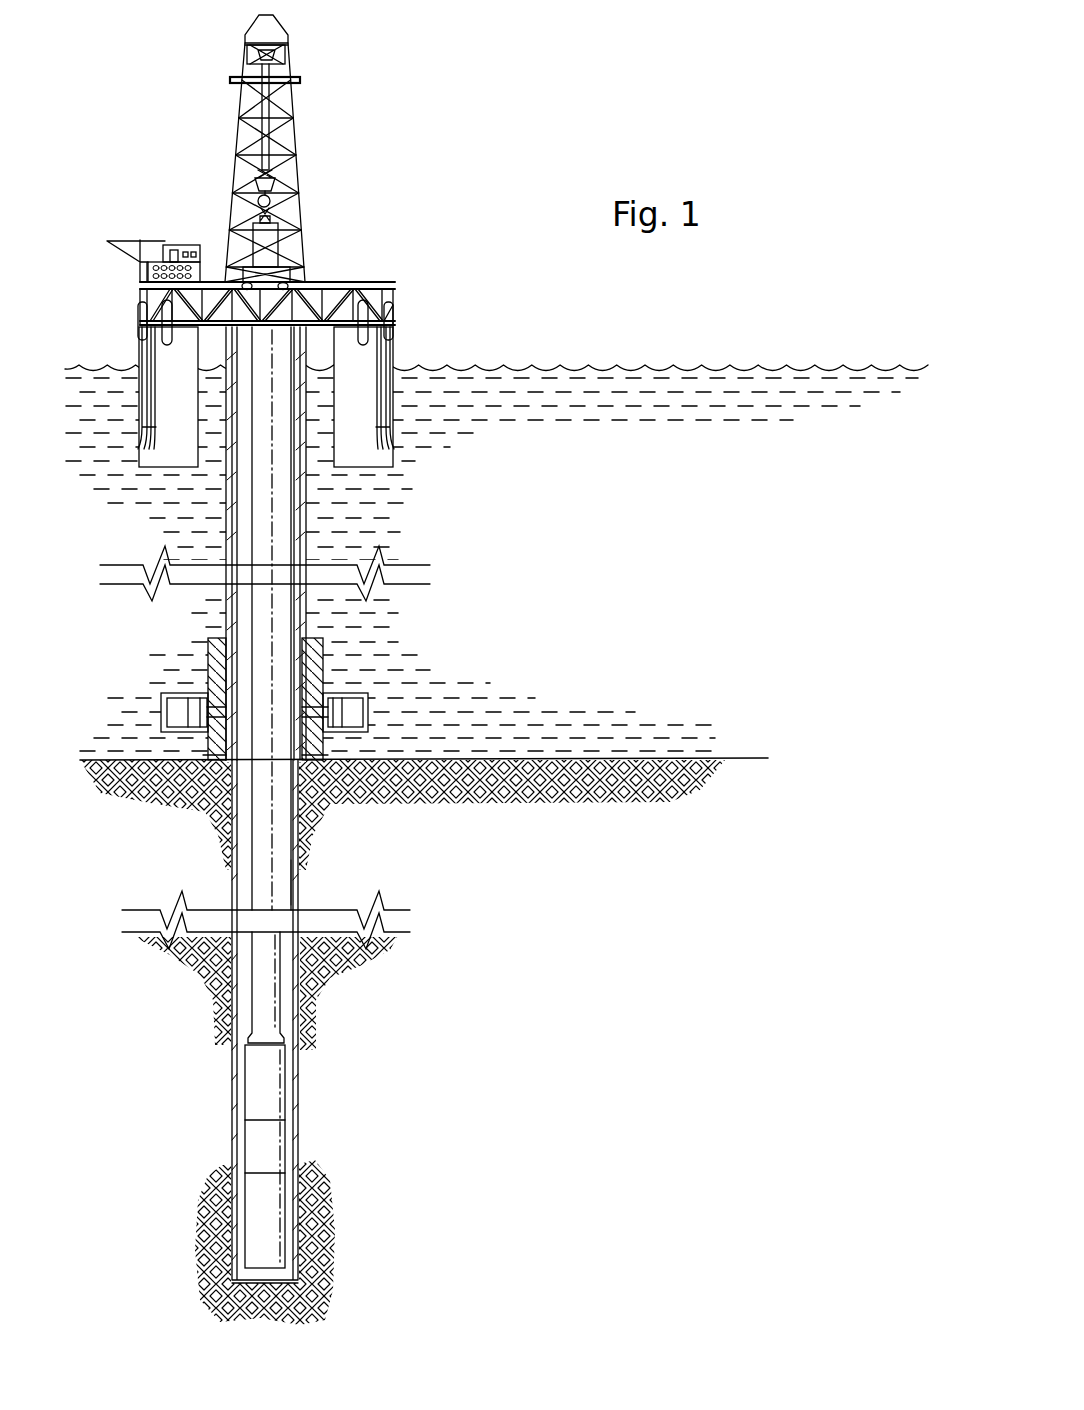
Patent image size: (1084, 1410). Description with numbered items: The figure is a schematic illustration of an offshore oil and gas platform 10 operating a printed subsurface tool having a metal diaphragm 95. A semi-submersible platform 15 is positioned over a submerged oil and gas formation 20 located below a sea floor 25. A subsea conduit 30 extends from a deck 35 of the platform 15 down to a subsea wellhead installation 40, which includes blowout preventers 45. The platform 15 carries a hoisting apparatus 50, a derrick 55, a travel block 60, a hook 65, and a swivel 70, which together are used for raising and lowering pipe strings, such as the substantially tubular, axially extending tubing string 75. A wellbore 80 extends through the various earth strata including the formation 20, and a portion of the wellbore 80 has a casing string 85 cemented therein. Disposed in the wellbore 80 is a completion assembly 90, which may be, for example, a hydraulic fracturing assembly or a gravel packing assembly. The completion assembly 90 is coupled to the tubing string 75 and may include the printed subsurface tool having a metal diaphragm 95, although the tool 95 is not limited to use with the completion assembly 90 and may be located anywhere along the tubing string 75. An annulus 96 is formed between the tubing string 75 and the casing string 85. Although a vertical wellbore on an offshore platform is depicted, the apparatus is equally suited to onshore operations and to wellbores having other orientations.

The offshore oil and gas platform 10 is at (408, 146).
The semi-submersible platform 15 is at (378, 283).
The oil and gas formation 20 is at (554, 1036).
The sea floor 25 is at (745, 757).
The subsea conduit 30 is at (307, 488).
The deck 35 is at (216, 282).
The subsea wellhead installation 40 is at (207, 670).
The blowout preventers 45 is at (355, 706).
The hoisting apparatus 50 is at (287, 262).
The derrick 55 is at (242, 52).
The travel block 60 is at (252, 183).
The hook 65 is at (281, 206).
The swivel 70 is at (290, 226).
The tubing string 75 is at (255, 871).
The wellbore 80 is at (291, 886).
The casing string 85 is at (298, 820).
The completion assembly 90 is at (306, 1108).
The printed subsurface tool having a metal diaphragm 95 is at (252, 1147).
The annulus 96 is at (294, 996).